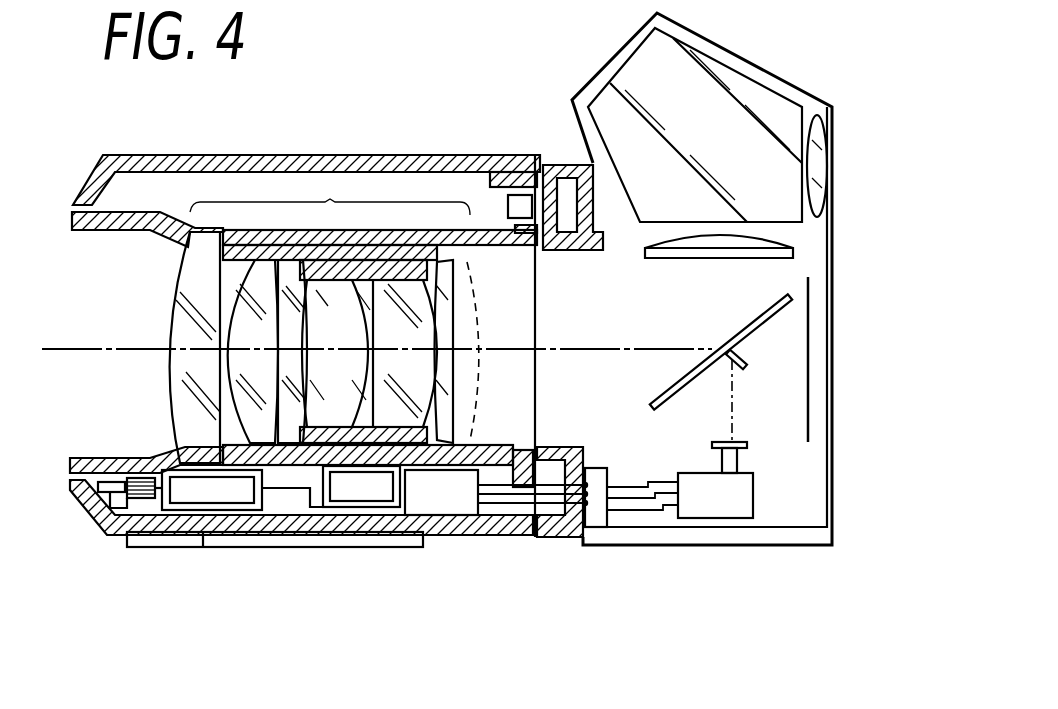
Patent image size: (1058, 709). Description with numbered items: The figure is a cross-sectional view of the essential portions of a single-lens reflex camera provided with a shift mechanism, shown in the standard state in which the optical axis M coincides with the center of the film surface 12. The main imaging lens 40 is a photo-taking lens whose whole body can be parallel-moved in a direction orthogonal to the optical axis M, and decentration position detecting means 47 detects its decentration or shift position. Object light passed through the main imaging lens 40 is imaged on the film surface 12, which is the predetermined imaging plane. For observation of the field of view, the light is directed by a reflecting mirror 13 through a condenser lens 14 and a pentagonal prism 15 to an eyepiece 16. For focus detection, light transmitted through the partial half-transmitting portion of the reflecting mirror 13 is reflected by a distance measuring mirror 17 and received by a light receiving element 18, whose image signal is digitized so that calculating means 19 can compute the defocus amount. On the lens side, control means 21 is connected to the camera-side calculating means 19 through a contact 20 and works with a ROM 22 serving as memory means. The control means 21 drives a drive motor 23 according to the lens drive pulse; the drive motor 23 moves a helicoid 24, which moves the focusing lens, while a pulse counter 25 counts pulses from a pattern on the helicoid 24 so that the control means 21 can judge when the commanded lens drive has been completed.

The film surface 12 is at (810, 307).
The reflecting mirror 13 is at (755, 320).
The condenser lens 14 is at (773, 243).
The pentagonal prism 15 is at (733, 68).
The eyepiece 16 is at (832, 132).
The distance measuring mirror 17 is at (747, 357).
The light receiving element 18 is at (740, 442).
The calculating means 19 is at (760, 527).
The contact 20 is at (587, 540).
The control means 21 is at (440, 515).
The ROM 22 is at (367, 507).
The drive motor 23 is at (203, 547).
The helicoid 24 is at (75, 210).
The pulse counter 25 is at (73, 497).
The main imaging lens 40 is at (330, 200).
The decentration position detecting means 47 is at (500, 195).
The optical axis M is at (100, 350).